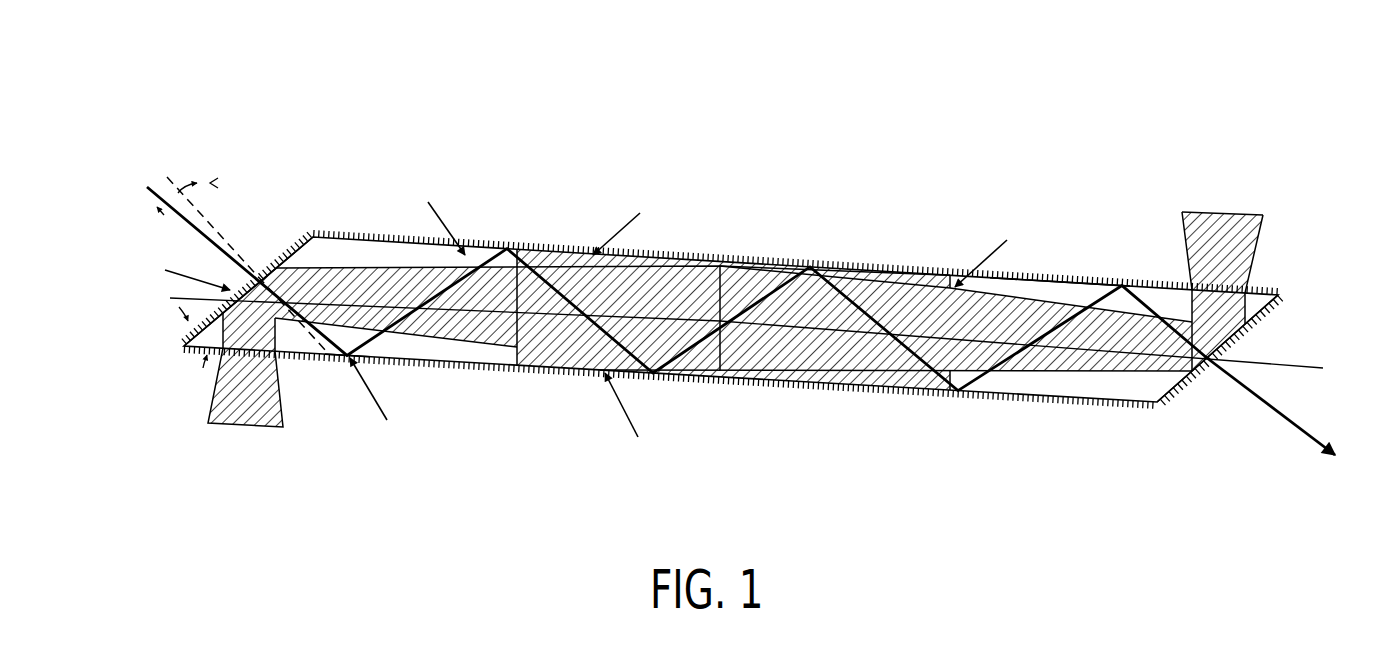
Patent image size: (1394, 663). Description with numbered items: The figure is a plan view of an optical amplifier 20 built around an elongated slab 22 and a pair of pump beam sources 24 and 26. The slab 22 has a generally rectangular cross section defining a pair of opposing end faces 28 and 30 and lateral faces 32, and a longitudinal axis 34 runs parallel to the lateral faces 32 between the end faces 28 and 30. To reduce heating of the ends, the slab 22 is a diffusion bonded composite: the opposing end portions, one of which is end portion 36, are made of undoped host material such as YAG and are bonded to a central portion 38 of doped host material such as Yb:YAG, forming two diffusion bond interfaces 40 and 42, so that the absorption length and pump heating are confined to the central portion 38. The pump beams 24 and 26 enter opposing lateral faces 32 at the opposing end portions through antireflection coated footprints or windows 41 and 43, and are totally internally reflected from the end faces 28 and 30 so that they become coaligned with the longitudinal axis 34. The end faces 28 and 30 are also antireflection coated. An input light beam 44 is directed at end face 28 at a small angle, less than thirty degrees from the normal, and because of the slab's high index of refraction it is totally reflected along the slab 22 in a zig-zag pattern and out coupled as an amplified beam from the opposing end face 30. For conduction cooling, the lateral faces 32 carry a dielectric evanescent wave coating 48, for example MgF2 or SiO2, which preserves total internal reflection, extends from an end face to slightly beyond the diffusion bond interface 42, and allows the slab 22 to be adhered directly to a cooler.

The optical amplifier 20 is at (900, 95).
The elongated slab 22 is at (347, 238).
The pump beam 24 is at (1283, 188).
The pump beam 26 is at (199, 456).
The end face 28 is at (277, 257).
The end face 30 is at (1240, 346).
The lateral face 32 is at (1027, 283).
The longitudinal axis 34 is at (1150, 180).
The end portion 36 is at (1300, 422).
The central portion 38 is at (823, 212).
The diffusion bond interface 40 is at (950, 273).
The footprint or window 41 is at (337, 358).
The diffusion bond interface 42 is at (517, 249).
The footprint or window 43 is at (1093, 282).
The input light beam 44 is at (153, 178).
The evanescent wave coating 48 is at (882, 389).